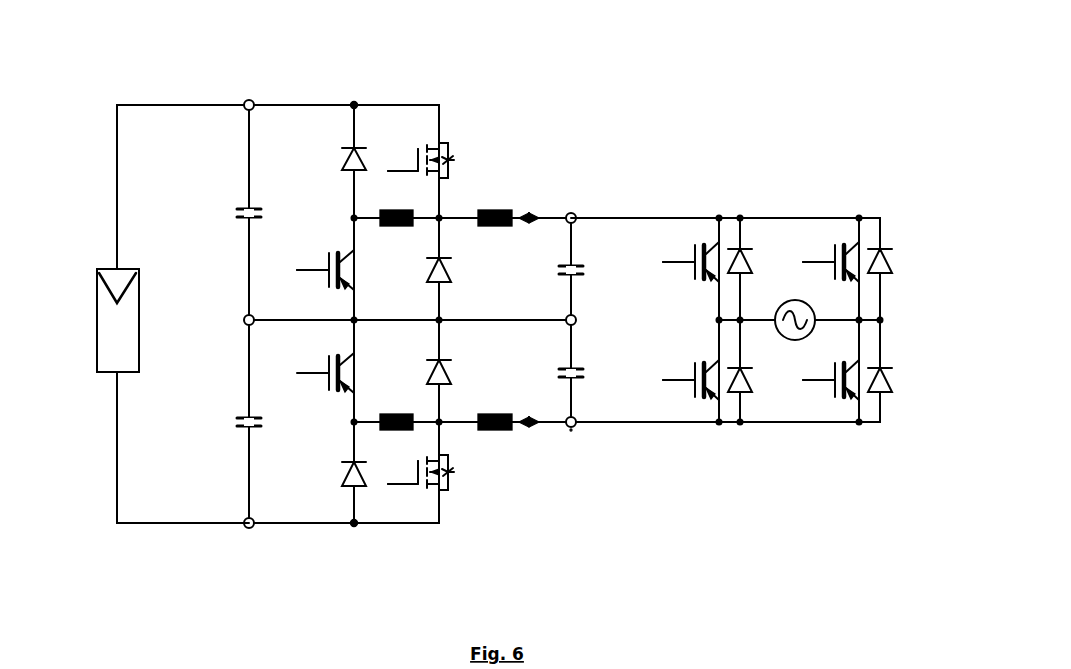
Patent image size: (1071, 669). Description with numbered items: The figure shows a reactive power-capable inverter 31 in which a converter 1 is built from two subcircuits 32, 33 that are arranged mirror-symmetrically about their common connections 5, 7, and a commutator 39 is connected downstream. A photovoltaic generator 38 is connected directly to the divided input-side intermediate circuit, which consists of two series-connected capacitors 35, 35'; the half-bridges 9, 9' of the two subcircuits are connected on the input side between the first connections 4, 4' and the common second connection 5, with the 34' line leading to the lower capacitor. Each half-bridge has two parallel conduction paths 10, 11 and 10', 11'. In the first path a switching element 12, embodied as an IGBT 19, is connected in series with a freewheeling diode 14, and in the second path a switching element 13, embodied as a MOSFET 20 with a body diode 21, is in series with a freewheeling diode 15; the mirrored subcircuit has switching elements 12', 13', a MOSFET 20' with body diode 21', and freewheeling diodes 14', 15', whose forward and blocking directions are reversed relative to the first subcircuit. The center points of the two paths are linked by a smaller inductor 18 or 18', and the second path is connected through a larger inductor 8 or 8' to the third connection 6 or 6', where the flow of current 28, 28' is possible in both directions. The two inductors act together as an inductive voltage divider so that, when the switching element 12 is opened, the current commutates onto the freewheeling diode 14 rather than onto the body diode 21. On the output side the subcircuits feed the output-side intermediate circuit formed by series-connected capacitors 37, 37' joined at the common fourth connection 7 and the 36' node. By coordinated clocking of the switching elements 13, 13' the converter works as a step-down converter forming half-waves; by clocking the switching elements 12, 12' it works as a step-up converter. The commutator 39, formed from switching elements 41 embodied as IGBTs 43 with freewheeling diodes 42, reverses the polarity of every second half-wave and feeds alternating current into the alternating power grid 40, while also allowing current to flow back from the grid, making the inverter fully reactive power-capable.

The converter 1 is at (546, 112).
The first connection 4 is at (256, 72).
The first connection 4' is at (257, 555).
The second connection 5 is at (243, 318).
The third connection 6 is at (575, 188).
The third connection 6' is at (561, 455).
The fourth connection 7 is at (578, 320).
The larger (first) inductor 8 is at (495, 190).
The larger (first) inductor 8' is at (495, 395).
The half-bridge 9 is at (471, 160).
The half-bridge 9' is at (481, 516).
The conduction path 10 is at (353, 71).
The conduction path 10' is at (352, 557).
The conduction path 11 is at (433, 77).
The conduction path 11' is at (398, 550).
The switching element 12 is at (325, 243).
The switching element 12' is at (320, 468).
The switching element 13 is at (403, 102).
The switching element 13' is at (456, 486).
The freewheeling diode 14 is at (333, 102).
The freewheeling diode 14' is at (374, 527).
The freewheeling diode 15 is at (472, 265).
The freewheeling diode 15' is at (468, 358).
The smaller (second) inductor 18 is at (391, 246).
The smaller (second) inductor 18' is at (395, 397).
The IGBT 19 is at (315, 250).
The MOSFET 20 is at (420, 106).
The MOSFET 20' is at (457, 467).
The body diode 21 is at (464, 178).
The body diode 21' is at (484, 480).
The flow of current 28 is at (534, 188).
The flow of current 28' is at (535, 395).
The inverter 31 is at (585, 112).
The subcircuit 32 is at (452, 138).
The subcircuit 33 is at (445, 542).
The connecting line 34' is at (231, 558).
The capacitor 35 is at (227, 125).
The capacitor 35' is at (217, 505).
The node 36' is at (586, 488).
The capacitor 37 is at (594, 214).
The capacitor 37' is at (590, 431).
The photovoltaic generator 38 is at (103, 270).
The commutator 39 is at (797, 188).
The alternating power grid 40 is at (796, 348).
The switching element 41 is at (697, 245).
The freewheeling diode 42 is at (745, 245).
The IGBT 43 is at (680, 245).